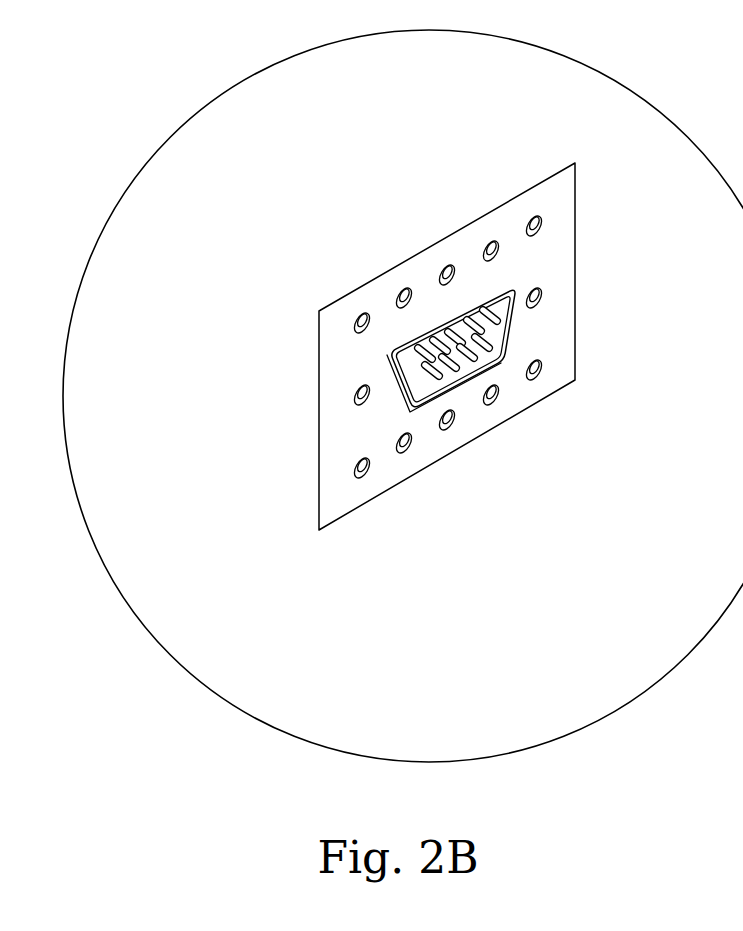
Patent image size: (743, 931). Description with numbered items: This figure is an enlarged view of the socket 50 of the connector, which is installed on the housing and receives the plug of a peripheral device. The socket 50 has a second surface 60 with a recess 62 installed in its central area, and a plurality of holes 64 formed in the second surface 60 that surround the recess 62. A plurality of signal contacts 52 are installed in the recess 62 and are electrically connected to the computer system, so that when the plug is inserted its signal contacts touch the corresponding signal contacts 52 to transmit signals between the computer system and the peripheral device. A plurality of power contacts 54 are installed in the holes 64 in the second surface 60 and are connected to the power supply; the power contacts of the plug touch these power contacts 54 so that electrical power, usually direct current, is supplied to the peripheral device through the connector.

The socket 50 is at (423, 381).
The signal contacts 52 is at (521, 281).
The power contacts 54 is at (400, 295).
The second surface 60 is at (553, 255).
The recess 62 is at (467, 307).
The holes 64 is at (412, 448).